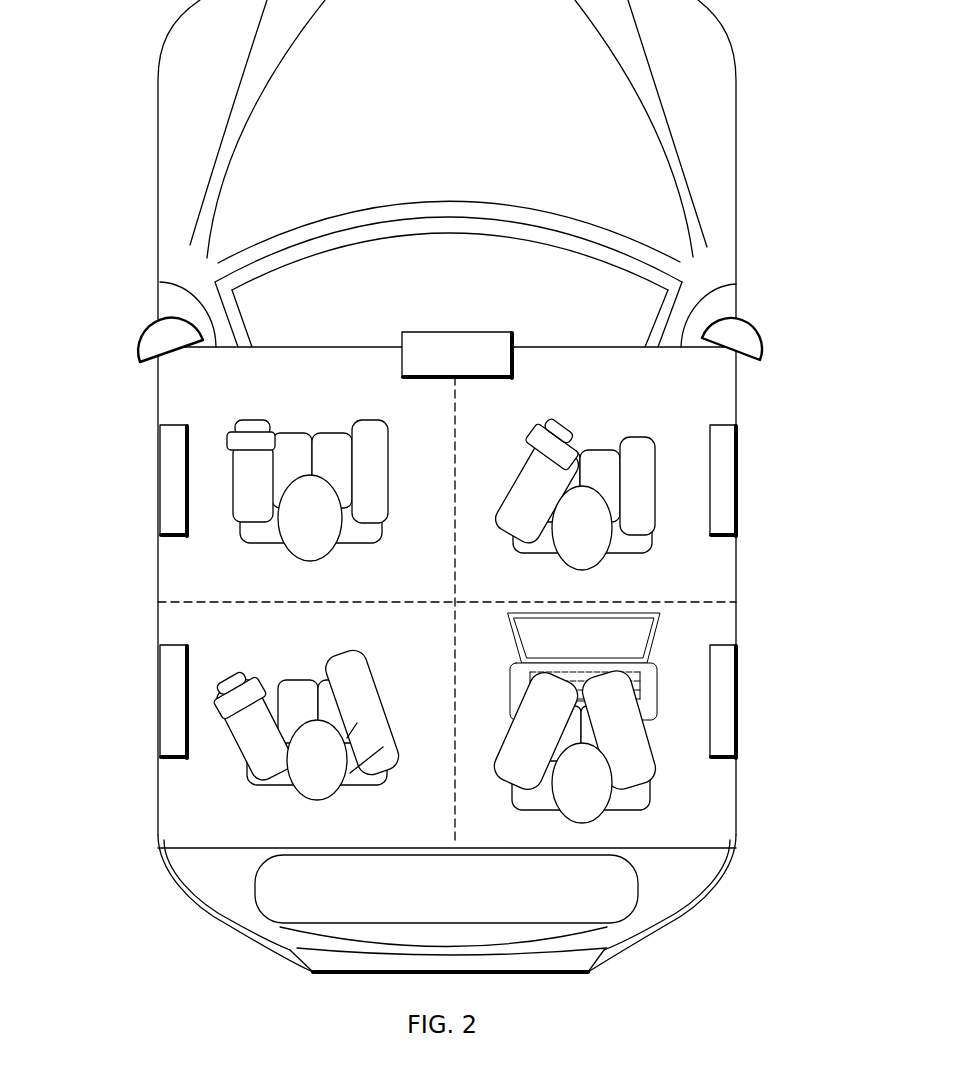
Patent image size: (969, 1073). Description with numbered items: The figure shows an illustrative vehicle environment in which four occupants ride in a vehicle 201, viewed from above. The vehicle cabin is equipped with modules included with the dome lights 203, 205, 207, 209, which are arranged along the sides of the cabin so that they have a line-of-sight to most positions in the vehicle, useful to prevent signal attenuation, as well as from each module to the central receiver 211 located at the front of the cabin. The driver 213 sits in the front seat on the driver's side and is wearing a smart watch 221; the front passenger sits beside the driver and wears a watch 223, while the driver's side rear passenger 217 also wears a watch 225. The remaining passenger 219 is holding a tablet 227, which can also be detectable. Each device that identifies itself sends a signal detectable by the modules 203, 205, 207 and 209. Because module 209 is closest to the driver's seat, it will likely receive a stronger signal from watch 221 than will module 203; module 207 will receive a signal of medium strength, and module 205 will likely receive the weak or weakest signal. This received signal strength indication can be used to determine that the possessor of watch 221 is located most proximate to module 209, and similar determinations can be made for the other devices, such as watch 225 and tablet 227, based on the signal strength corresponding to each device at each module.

The vehicle 201 is at (553, 310).
The dome light module 203 is at (737, 480).
The dome light module 205 is at (737, 699).
The dome light module 207 is at (158, 699).
The dome light module 209 is at (158, 480).
The central receiver 211 is at (452, 332).
The driver 213 is at (308, 547).
The driver's side rear passenger 217 is at (306, 788).
The passenger 219 is at (594, 811).
The smart watch 221 is at (240, 442).
The mobile device of front right passenger 223 is at (548, 446).
The watch 225 is at (258, 690).
The tablet 227 is at (523, 625).